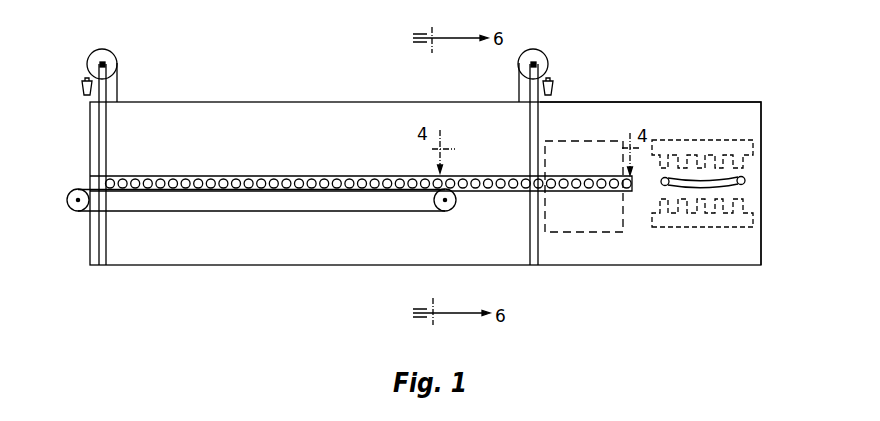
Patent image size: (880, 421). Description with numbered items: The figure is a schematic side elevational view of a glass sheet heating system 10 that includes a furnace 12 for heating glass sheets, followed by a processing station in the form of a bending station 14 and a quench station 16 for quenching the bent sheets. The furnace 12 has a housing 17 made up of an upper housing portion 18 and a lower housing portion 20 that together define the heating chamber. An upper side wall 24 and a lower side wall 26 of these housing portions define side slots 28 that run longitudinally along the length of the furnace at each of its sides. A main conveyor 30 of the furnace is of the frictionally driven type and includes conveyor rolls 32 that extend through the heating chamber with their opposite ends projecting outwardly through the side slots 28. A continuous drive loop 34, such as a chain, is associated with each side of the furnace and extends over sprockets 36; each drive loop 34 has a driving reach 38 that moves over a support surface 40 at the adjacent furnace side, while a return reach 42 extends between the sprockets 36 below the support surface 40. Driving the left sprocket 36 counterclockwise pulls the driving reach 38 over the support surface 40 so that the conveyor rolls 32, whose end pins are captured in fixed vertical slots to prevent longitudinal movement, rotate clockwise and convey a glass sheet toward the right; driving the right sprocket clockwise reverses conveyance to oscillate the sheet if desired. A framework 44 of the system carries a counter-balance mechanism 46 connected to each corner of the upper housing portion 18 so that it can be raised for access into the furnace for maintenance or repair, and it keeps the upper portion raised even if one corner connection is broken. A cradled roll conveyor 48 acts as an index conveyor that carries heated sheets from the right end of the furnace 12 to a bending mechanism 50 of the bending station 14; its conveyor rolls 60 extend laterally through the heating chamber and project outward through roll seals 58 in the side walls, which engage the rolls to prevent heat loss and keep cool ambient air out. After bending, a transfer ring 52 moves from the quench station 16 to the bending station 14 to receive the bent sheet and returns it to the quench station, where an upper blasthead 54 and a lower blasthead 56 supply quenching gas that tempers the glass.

The glass sheet heating system 10 is at (358, 33).
The furnace 12 is at (273, 100).
The bending station 14 is at (592, 96).
The quench station 16 is at (721, 92).
The housing 17 is at (342, 114).
The upper housing portion 18 is at (312, 100).
The lower housing portion 20 is at (328, 264).
The upper side wall 24 is at (228, 110).
The lower side wall 26 is at (253, 243).
The side slots 28 is at (175, 183).
The main conveyor 30 is at (345, 170).
The conveyor rolls 32 is at (262, 180).
The continuous drive loop 34 is at (147, 222).
The sprockets 36 is at (75, 210).
The driving reach 38 is at (218, 191).
The support surface 40 is at (293, 191).
The return reach 42 is at (372, 212).
The framework 44 is at (92, 131).
The counter-balance mechanism 46 is at (124, 56).
The cradled roll conveyor 48 is at (502, 209).
The bending mechanism 50 is at (587, 233).
The transfer ring 52 is at (745, 182).
The upper blasthead 54 is at (762, 145).
The lower blasthead 56 is at (755, 223).
The roll seals 58 is at (479, 169).
The conveyor rolls 60 is at (512, 175).